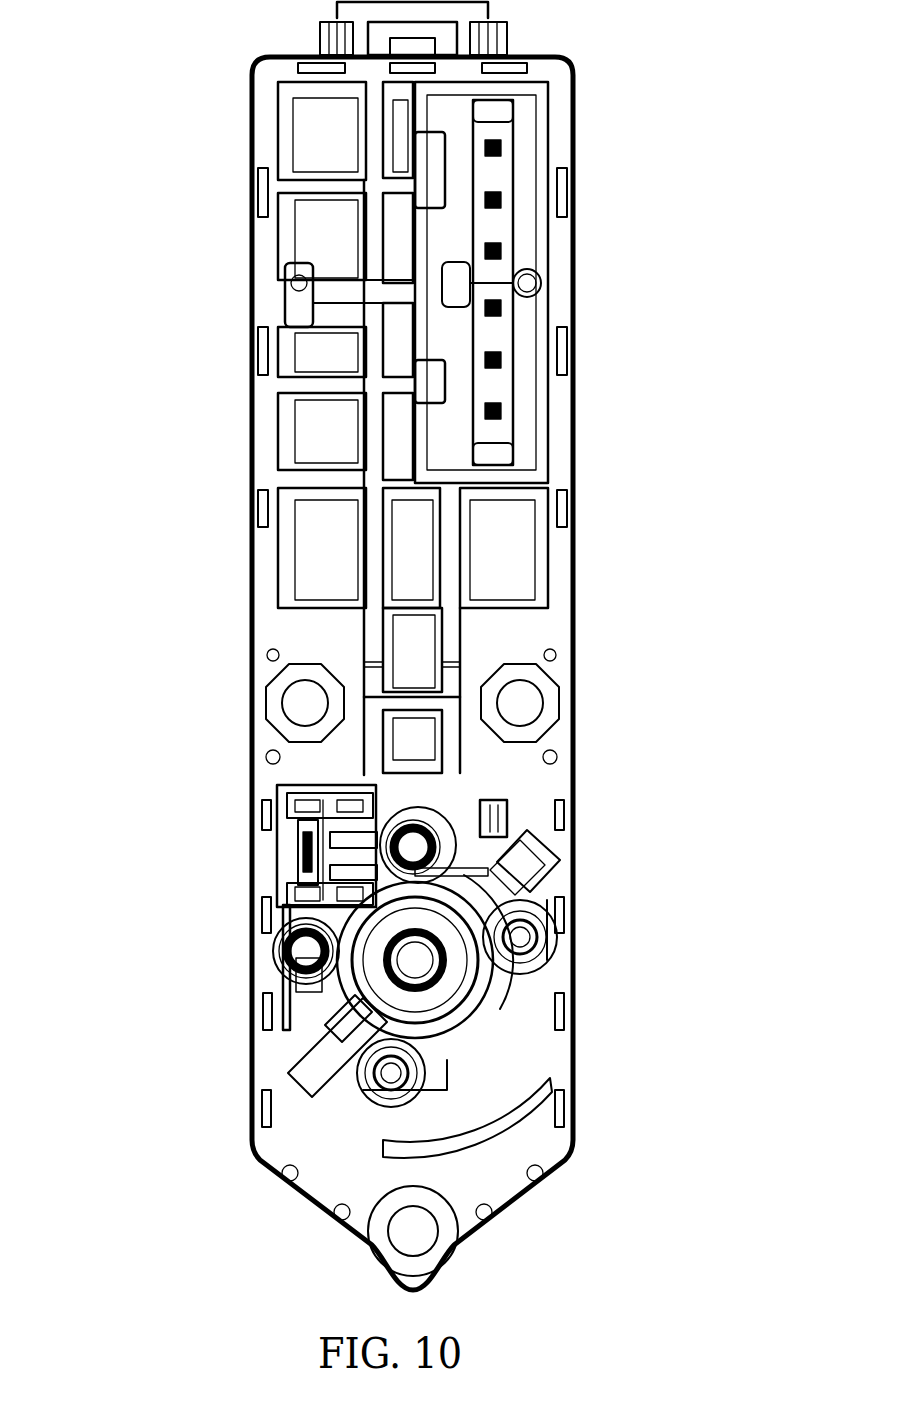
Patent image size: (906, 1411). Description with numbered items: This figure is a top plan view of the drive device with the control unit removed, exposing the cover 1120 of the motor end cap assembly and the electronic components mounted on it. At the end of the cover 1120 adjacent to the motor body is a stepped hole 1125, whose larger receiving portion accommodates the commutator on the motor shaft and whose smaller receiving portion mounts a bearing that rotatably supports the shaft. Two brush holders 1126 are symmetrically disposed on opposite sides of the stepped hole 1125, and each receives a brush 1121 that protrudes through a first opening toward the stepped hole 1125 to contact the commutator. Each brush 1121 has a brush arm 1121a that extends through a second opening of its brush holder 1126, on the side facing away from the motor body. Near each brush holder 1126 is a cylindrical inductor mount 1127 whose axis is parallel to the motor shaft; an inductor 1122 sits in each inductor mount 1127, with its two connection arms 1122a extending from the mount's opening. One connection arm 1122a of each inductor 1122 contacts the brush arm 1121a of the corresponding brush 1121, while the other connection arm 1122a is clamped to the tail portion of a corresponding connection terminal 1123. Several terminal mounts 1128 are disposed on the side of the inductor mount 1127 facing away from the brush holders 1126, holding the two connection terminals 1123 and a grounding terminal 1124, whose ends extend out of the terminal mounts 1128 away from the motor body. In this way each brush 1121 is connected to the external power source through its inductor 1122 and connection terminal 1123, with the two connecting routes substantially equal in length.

The cover 1120 is at (268, 572).
The brush 1121 is at (280, 1068).
The brush arm 1121a is at (263, 975).
The inductor 1122 is at (285, 930).
The connection arm 1122a is at (285, 975).
The connection terminal 1123 is at (330, 796).
The grounding terminal 1124 is at (305, 850).
The stepped hole 1125 is at (487, 1007).
The brush holder 1126 is at (290, 1040).
The inductor mount 1127 is at (300, 935).
The terminal mount 1128 is at (355, 785).